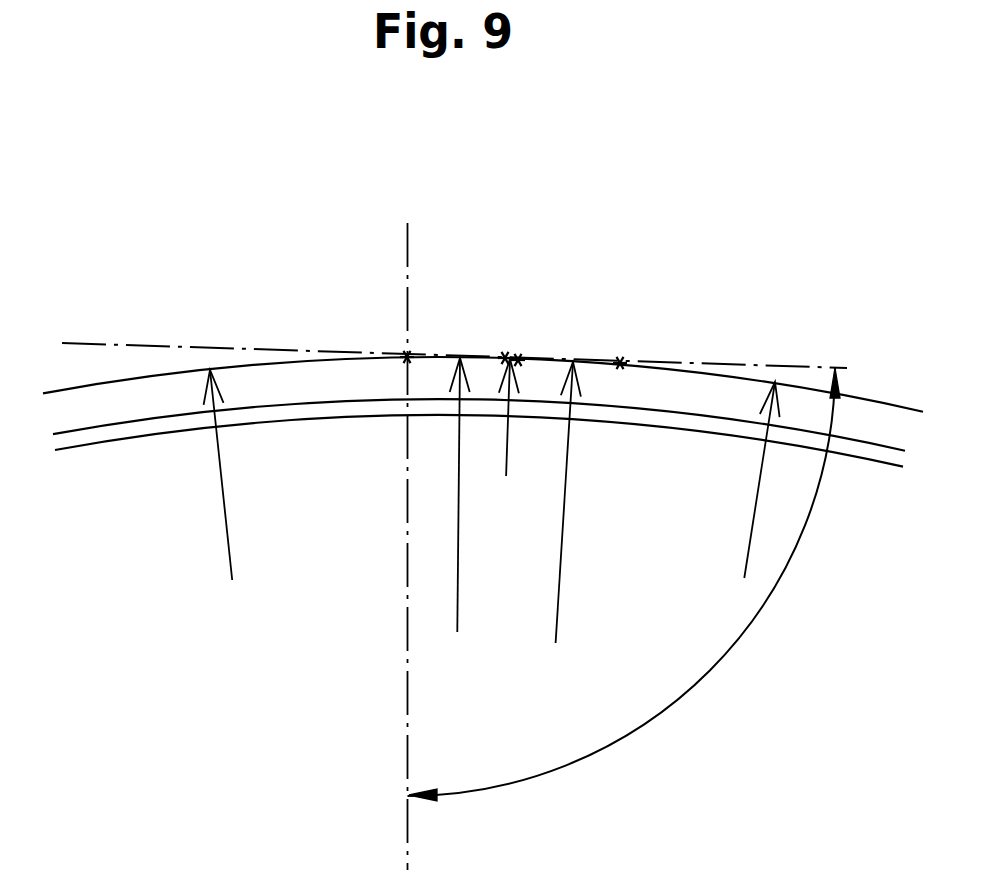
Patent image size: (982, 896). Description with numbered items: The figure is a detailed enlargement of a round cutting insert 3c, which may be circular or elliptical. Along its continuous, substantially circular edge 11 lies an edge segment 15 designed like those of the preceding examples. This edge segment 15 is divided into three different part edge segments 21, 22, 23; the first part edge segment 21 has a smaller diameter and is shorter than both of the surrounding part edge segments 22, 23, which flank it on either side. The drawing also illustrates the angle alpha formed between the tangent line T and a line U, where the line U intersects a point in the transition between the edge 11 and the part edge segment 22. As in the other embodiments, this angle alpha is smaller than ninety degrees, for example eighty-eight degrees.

The cutting insert 3c is at (454, 286).
The edge 11 is at (262, 362).
The edge segment 15 is at (481, 325).
The part edge segment 21 is at (510, 357).
The part edge segment 22 is at (438, 357).
The part edge segment 23 is at (585, 360).
The tangent line T is at (727, 365).
The line U is at (407, 583).